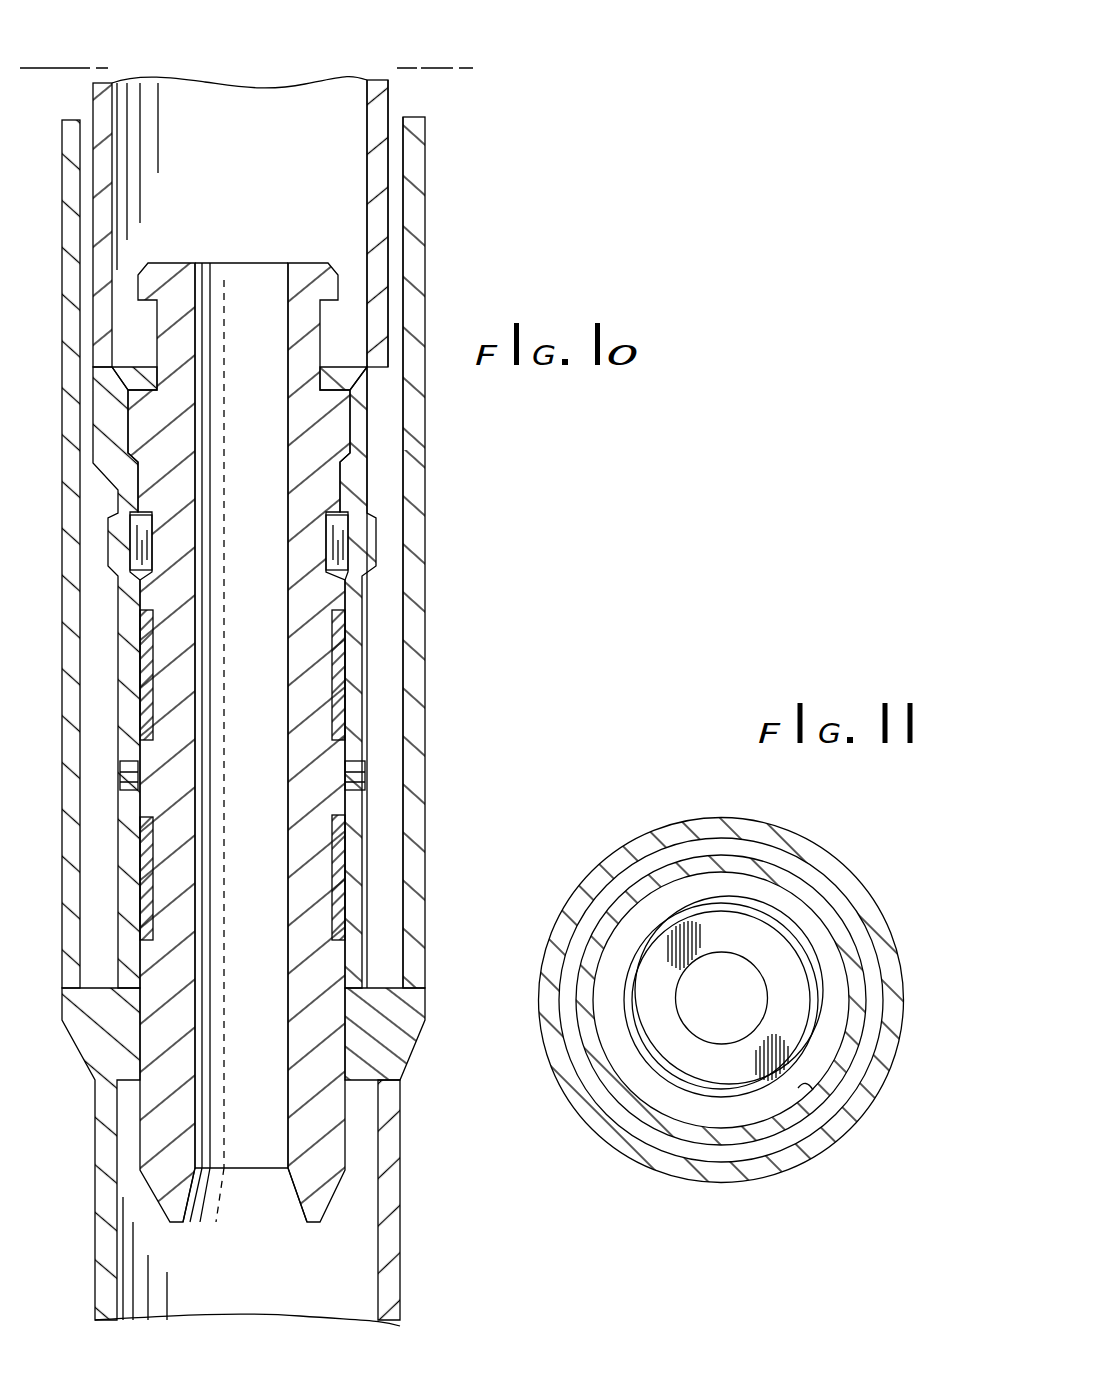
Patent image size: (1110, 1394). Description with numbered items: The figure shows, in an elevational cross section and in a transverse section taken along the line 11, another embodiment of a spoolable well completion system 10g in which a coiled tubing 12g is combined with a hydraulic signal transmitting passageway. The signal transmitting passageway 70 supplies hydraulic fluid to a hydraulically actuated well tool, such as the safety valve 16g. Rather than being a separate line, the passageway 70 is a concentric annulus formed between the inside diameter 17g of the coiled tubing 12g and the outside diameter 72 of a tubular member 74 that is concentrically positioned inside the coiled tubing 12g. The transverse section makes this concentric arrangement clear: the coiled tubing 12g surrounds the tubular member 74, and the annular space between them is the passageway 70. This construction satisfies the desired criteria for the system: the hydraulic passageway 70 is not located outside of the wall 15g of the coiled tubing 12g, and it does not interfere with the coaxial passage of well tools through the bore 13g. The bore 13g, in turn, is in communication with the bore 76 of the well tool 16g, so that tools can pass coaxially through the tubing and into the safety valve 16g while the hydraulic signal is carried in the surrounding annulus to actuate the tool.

In FIG. 10, the spoolable well completion system 10g is at (434, 543).
In FIG. 10, the section line 11— 11 is at (437, 58).
In FIG. 10, the coiled tubing 12g is at (434, 265).
In FIG. 11, the coiled tubing 12g is at (601, 850).
In FIG. 10, the bore 13g is at (275, 235).
In FIG. 11, the bore 13g is at (739, 1014).
In FIG. 10, the wall 15g is at (403, 178).
In FIG. 11, the wall 15g is at (817, 856).
In FIG. 10, the safety valve 16g is at (313, 589).
In FIG. 11, the safety valve 16g is at (653, 1036).
In FIG. 10, the inside diameter 17g is at (400, 160).
In FIG. 10, the hydraulic signal transmitting passageway 70 is at (392, 215).
In FIG. 11, the hydraulic signal transmitting passageway 70 is at (638, 1123).
In FIG. 10, the outside diameter 72 is at (388, 95).
In FIG. 11, the outside diameter 72 is at (743, 1147).
In FIG. 10, the tubular member 74 is at (367, 106).
In FIG. 11, the tubular member 74 is at (817, 1086).
In FIG. 10, the bore 76 is at (267, 513).